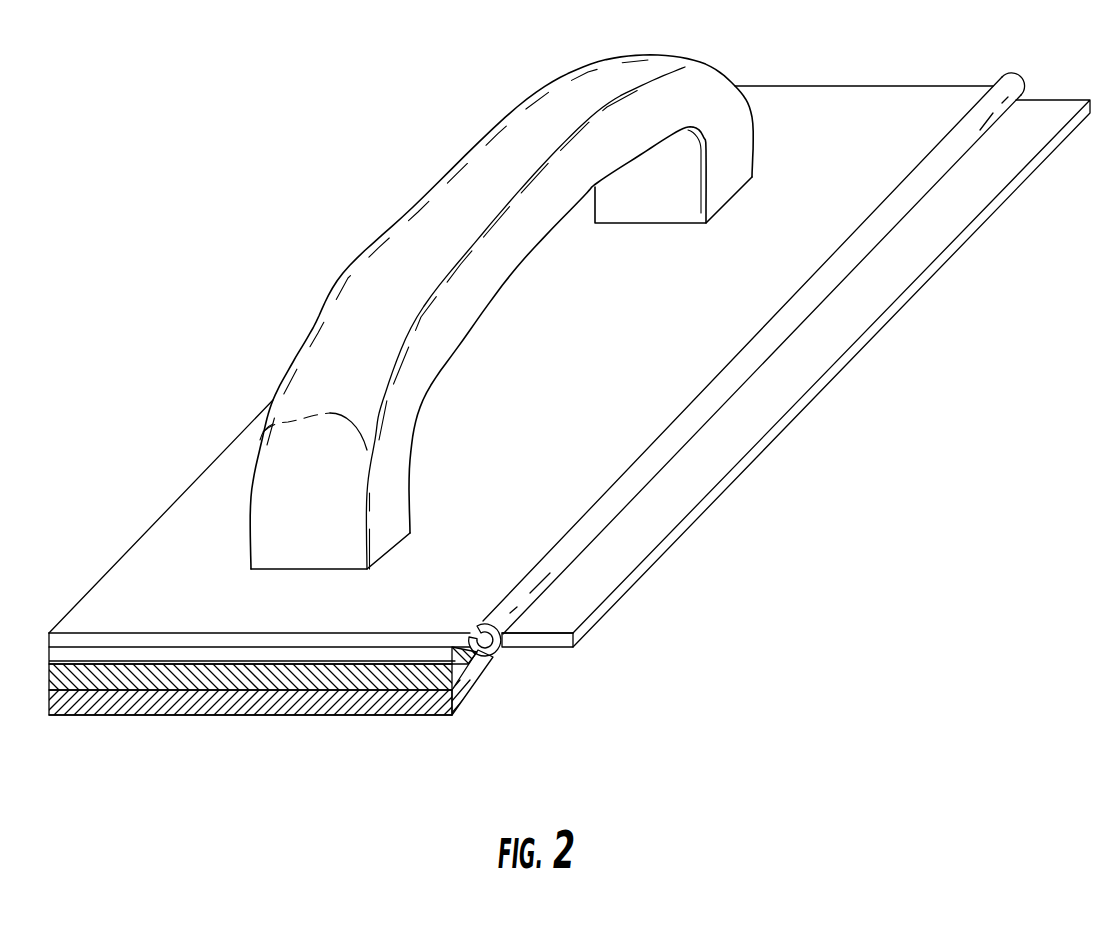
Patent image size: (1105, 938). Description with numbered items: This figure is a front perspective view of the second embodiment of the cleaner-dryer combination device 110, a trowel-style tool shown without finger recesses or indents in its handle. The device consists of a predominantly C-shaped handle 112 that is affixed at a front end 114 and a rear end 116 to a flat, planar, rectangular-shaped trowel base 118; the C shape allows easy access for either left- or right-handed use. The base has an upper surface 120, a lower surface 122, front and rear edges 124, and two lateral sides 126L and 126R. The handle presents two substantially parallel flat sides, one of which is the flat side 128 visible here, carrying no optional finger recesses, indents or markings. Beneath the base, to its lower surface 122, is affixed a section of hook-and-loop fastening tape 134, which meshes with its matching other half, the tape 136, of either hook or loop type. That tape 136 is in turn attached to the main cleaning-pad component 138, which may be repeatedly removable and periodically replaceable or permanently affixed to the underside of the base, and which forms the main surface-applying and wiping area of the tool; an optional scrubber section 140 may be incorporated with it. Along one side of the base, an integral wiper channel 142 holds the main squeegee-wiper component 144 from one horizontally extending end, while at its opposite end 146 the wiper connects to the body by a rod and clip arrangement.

The cleaner-dryer combination device 110 is at (303, 280).
The C-shaped handle 112 is at (722, 108).
The front end 114 is at (410, 533).
The rear end 116 is at (752, 178).
The trowel base 118 is at (585, 343).
The upper surface 120 is at (812, 206).
The lower surface 122 is at (413, 647).
The front and rear edges 124 is at (282, 632).
The right lateral side 126R is at (165, 512).
The left lateral side 126L is at (722, 352).
The flat side of handle 128 is at (695, 118).
The hook-and-loop fastening tape 134 is at (160, 658).
The matching fastening tape 136 is at (297, 664).
The cleaning-pad component 138 is at (377, 677).
The scrubber section 140 is at (190, 717).
The wiper channel 142 is at (730, 397).
The squeegee-wiper component 144 is at (973, 236).
The opposite end 146 is at (482, 625).